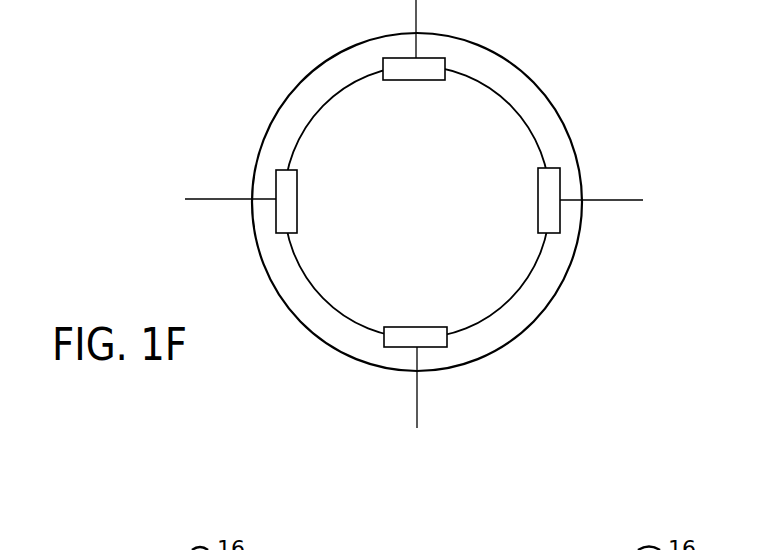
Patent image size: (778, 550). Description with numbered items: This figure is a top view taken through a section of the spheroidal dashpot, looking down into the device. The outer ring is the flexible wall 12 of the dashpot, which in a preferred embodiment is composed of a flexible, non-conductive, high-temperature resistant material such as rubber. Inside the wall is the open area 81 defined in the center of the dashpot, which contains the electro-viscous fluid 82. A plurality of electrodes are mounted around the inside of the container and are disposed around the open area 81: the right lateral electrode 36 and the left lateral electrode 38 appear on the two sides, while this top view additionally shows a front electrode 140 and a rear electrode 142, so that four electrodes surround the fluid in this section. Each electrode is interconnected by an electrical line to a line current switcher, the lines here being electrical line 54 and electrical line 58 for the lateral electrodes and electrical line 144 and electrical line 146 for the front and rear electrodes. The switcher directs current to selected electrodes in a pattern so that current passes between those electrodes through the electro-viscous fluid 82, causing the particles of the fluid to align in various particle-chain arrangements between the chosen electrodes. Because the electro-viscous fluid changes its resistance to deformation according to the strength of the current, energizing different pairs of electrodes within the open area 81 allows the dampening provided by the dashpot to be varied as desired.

The flexible wall 12 is at (531, 96).
The right lateral electrode 36 is at (552, 182).
The left lateral electrode 38 is at (285, 222).
The electrical line 54 is at (200, 198).
The electrical line 58 is at (611, 207).
The open area 81 is at (418, 137).
The electro-viscous fluid 82 is at (493, 200).
The front electrode 140 is at (435, 342).
The rear electrode 142 is at (384, 72).
The electrical line 144 is at (447, 29).
The electrical line 146 is at (412, 400).